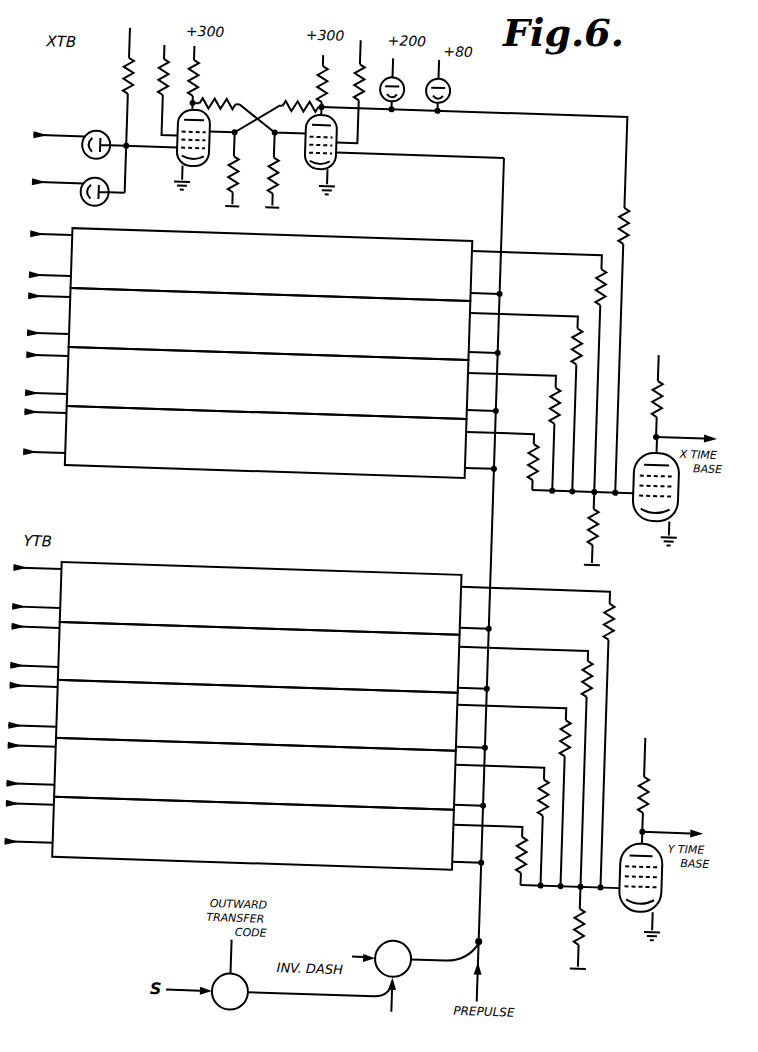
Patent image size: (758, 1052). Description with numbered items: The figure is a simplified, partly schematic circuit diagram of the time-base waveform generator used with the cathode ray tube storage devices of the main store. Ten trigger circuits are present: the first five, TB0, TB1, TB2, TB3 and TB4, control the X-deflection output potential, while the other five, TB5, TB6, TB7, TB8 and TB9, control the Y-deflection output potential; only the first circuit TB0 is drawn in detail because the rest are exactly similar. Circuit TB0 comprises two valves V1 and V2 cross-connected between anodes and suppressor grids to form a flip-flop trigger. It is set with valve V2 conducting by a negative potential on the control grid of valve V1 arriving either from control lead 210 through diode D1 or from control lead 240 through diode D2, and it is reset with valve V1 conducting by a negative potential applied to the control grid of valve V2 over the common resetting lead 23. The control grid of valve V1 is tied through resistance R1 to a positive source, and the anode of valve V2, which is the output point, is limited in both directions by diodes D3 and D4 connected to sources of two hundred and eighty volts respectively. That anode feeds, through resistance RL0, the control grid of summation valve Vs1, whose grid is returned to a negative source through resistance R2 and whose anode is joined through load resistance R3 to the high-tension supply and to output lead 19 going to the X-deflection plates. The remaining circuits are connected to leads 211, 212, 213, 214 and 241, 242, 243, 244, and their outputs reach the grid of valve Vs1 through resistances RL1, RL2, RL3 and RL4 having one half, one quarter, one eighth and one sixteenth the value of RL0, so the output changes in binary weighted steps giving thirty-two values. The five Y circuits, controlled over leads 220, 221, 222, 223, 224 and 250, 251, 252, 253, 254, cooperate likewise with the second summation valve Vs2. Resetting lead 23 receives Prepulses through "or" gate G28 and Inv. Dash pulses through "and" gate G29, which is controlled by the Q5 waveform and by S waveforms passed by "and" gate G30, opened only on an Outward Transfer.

The control lead 210 is at (60, 148).
The control lead 240 is at (60, 195).
The control lead 211 is at (54, 247).
The control lead 241 is at (53, 288).
The control lead 212 is at (50, 313).
The control lead 242 is at (48, 325).
The control lead 213 is at (50, 372).
The control lead 243 is at (46, 384).
The control lead 214 is at (49, 429).
The control lead 244 is at (51, 470).
The control lead 220 is at (62, 580).
The control lead 250 is at (48, 620).
The control lead 221 is at (50, 645).
The control lead 251 is at (34, 659).
The control lead 222 is at (51, 704).
The control lead 252 is at (32, 718).
The control lead 223 is at (52, 763).
The control lead 253 is at (30, 777).
The control lead 224 is at (56, 822).
The control lead 254 is at (61, 860).
The resetting lead 23 is at (501, 190).
The output lead 19 is at (692, 426).
The resistance R1 is at (113, 98).
The resistance R2 is at (606, 529).
The load resistance R3 is at (664, 585).
The diode D1 is at (96, 144).
The diode D2 is at (105, 213).
The diode D3 is at (386, 85).
The diode D4 is at (455, 87).
The valve V1 is at (198, 151).
The valve V2 is at (316, 150).
The trigger circuit TB0 is at (257, 142).
The trigger circuit TB1 is at (272, 264).
The trigger circuit TB2 is at (270, 324).
The trigger circuit TB3 is at (268, 383).
The trigger circuit TB4 is at (266, 442).
The trigger circuit TB5 is at (261, 598).
The trigger circuit TB6 is at (259, 657).
The trigger circuit TB7 is at (257, 715).
The trigger circuit TB8 is at (255, 774).
The trigger circuit TB9 is at (253, 833).
The resistance RL0 is at (470, 300).
The resistance RL1 is at (597, 282).
The resistance RL2 is at (576, 346).
The resistance RL3 is at (512, 432).
The resistance RL4 is at (501, 461).
The summation valve Vs1 is at (671, 491).
The summation valve Vs2 is at (658, 886).
The "or" gate G28 is at (466, 949).
The "and" gate G29 is at (416, 944).
The "and" gate G30 is at (265, 1016).
The Q5 waveform Q5 is at (325, 1005).